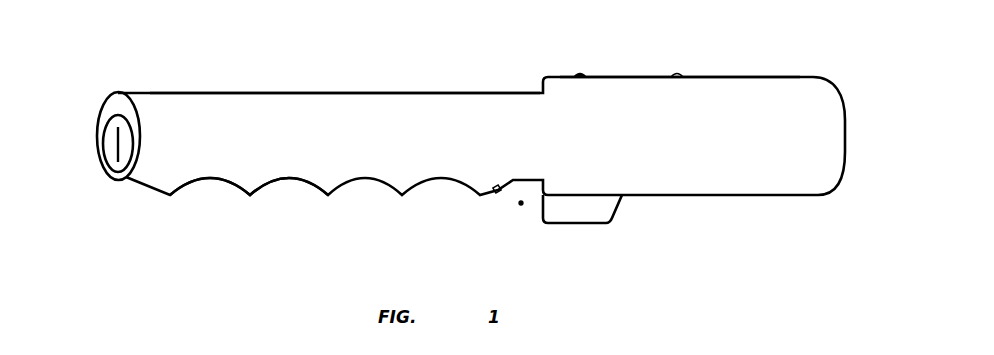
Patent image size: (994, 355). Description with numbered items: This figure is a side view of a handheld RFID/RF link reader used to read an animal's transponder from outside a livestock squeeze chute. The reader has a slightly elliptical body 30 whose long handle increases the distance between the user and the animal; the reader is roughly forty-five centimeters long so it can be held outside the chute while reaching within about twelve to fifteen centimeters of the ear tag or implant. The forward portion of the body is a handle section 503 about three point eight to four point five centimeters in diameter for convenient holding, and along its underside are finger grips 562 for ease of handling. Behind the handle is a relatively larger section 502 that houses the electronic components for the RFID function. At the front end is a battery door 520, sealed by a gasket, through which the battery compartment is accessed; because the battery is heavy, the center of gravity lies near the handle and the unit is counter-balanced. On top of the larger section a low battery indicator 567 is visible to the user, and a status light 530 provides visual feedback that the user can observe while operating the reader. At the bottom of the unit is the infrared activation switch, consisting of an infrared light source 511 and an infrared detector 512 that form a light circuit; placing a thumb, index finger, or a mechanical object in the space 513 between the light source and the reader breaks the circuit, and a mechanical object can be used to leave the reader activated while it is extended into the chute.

The body 30 is at (843, 172).
The battery door 520 is at (103, 167).
The handle section 503 is at (282, 98).
The relatively larger section 502 is at (588, 95).
The low battery indicator 567 is at (578, 74).
The status light 530 is at (682, 74).
The finger grips 562 is at (252, 189).
The infrared detector 512 is at (500, 194).
The space 513 is at (520, 205).
The infrared light source 511 is at (540, 207).